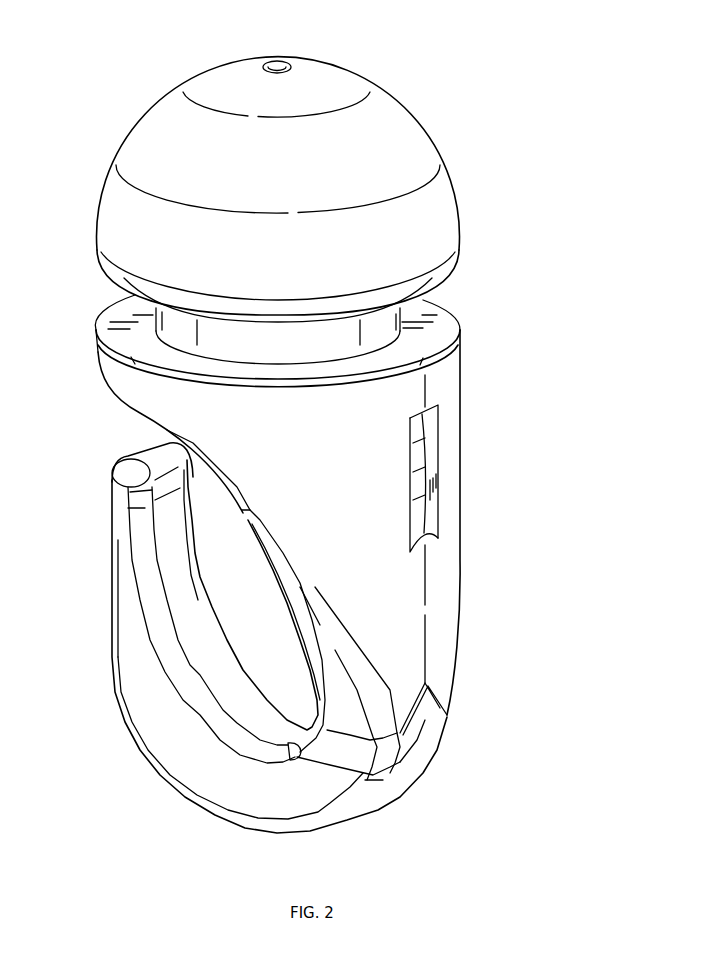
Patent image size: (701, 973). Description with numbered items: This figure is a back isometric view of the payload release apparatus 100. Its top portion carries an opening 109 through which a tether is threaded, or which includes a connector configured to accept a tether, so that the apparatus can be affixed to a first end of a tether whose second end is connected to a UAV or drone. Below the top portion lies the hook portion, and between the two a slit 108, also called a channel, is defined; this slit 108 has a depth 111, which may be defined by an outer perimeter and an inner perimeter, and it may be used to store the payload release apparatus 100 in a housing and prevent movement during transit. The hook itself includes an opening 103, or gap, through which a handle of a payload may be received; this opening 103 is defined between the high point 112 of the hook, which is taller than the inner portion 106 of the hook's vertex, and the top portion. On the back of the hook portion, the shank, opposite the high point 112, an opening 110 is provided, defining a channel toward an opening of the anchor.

The payload release apparatus 100 is at (460, 118).
The opening 103 is at (97, 347).
The inner portion 106 is at (277, 718).
The slit 108 is at (98, 265).
The opening 109 is at (292, 64).
The opening 110 is at (417, 435).
The depth 111 is at (395, 341).
The high point 112 is at (135, 472).